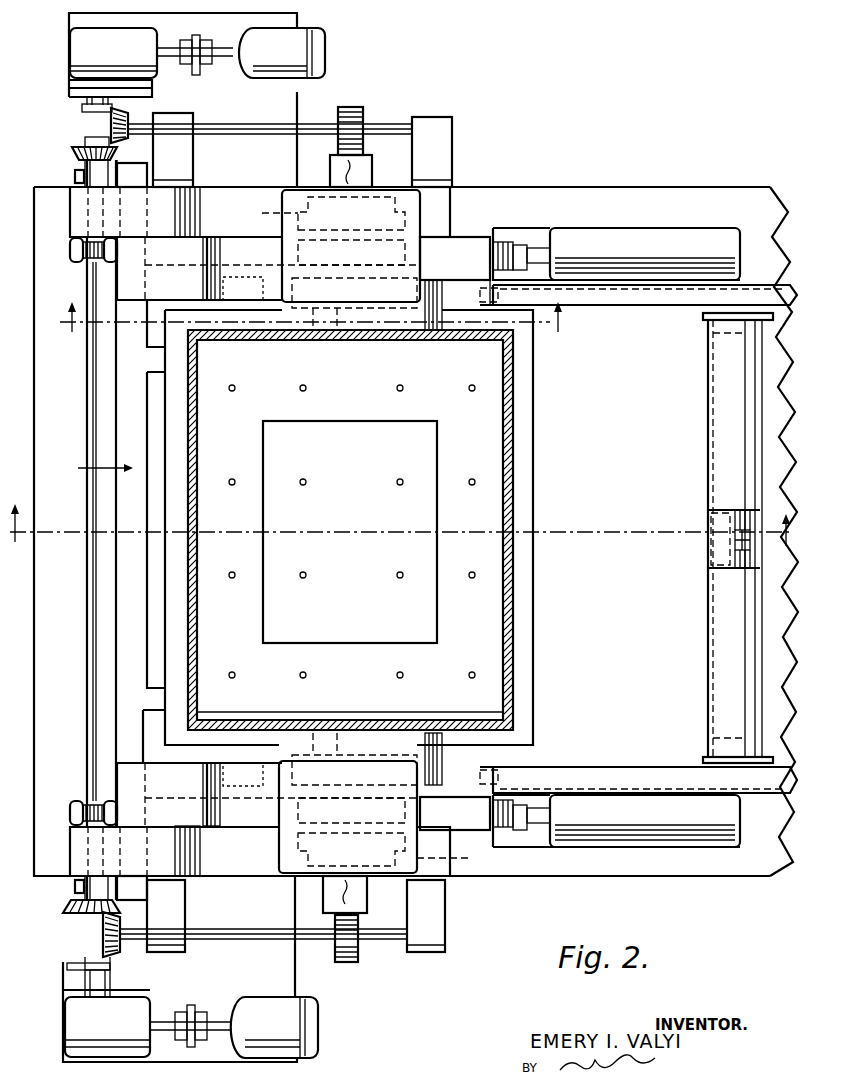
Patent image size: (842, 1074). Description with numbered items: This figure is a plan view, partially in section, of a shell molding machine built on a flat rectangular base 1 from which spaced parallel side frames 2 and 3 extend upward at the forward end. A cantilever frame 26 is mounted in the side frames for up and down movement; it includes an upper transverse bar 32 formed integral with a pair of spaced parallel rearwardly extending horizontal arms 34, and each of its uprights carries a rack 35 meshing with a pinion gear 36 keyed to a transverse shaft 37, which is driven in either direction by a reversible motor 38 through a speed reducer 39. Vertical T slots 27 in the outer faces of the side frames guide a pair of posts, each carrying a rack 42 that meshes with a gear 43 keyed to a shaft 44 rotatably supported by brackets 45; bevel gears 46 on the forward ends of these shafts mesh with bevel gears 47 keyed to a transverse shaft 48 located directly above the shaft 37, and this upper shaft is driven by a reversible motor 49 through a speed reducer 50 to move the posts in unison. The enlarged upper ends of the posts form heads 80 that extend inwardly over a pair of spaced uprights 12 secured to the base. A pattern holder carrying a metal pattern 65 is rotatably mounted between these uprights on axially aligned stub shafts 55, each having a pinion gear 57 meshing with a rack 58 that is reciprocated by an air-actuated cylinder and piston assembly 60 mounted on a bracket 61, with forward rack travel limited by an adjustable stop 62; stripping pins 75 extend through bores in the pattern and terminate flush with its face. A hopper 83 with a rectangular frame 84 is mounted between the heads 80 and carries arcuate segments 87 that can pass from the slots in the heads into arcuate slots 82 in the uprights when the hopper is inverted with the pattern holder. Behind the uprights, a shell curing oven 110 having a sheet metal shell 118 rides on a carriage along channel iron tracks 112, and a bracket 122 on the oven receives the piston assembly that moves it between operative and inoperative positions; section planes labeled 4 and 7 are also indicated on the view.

The base 1 is at (668, 590).
The side frame 2 is at (244, 876).
The side frame 3 is at (248, 187).
The section line 4- 4 is at (398, 543).
The section line 7- 7 is at (317, 327).
The uprights 12 is at (472, 745).
The cantilever frame 26 is at (90, 467).
The T slots 27 is at (363, 535).
The transverse bar 32 is at (122, 613).
The horizontal arms 34 is at (142, 361).
The rack 35 is at (147, 175).
The pinion gears 36 is at (75, 176).
The transverse shaft 37 is at (85, 141).
The reversible motor 38 is at (282, 53).
The speed reducer 39 is at (151, 53).
The rack 42 is at (351, 532).
The gear 43 is at (352, 107).
The shaft 44 is at (250, 124).
The brackets 45 is at (193, 152).
The bevel gears 46 is at (130, 112).
The bevel gears 47 is at (72, 153).
The transverse shaft 48 is at (87, 740).
The reversible motor 49 is at (274, 1027).
The speed reducer 50 is at (147, 1027).
The stub shafts 55 is at (340, 290).
The pinion gear 57 is at (298, 252).
The rack 58 is at (520, 242).
The air-actuated cylinder and piston assemblies 60 is at (660, 856).
The brackets 61 is at (528, 845).
The adjustable stops 62 is at (78, 264).
The metal pattern 65 is at (480, 513).
The stripping pins 75 is at (396, 388).
The heads 80 is at (420, 225).
The arcuate slots 82 is at (455, 274).
The hopper 83 is at (507, 439).
The rectangular frame 84 is at (515, 640).
The arcuate segments 87 is at (306, 332).
The shell curing oven 110 is at (707, 663).
The channel iron tracks 112 is at (602, 306).
The sheet metal shell 118 is at (745, 470).
The bracket 122 is at (710, 553).